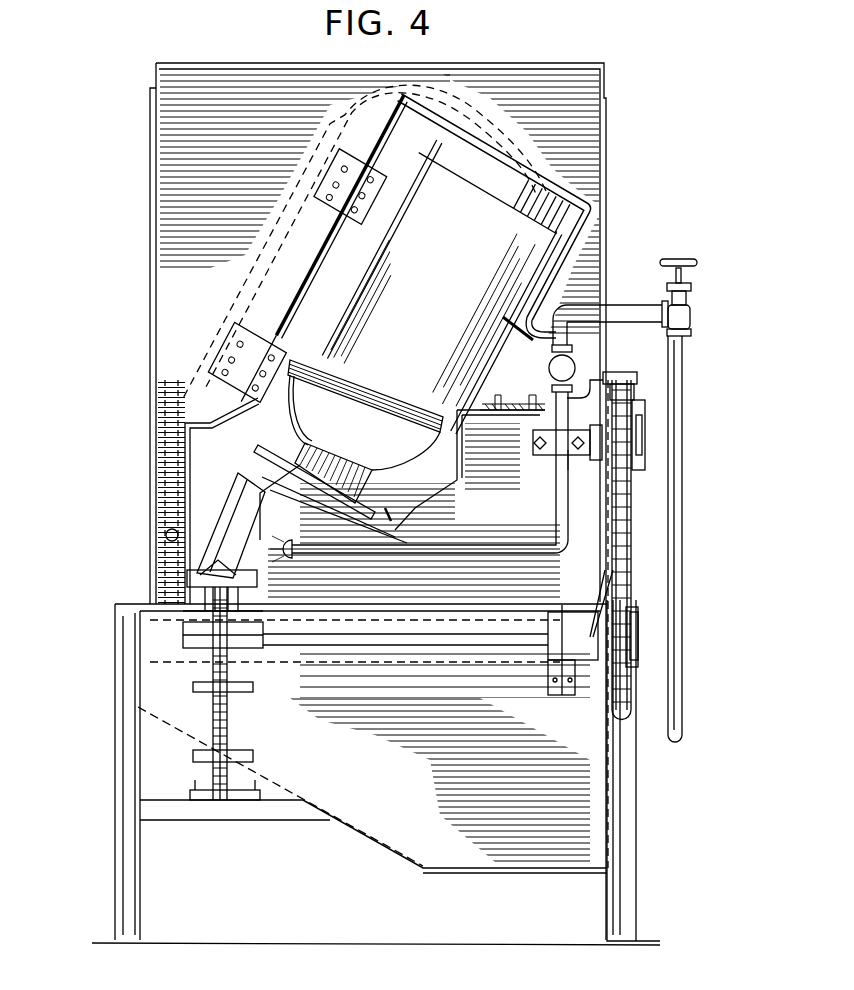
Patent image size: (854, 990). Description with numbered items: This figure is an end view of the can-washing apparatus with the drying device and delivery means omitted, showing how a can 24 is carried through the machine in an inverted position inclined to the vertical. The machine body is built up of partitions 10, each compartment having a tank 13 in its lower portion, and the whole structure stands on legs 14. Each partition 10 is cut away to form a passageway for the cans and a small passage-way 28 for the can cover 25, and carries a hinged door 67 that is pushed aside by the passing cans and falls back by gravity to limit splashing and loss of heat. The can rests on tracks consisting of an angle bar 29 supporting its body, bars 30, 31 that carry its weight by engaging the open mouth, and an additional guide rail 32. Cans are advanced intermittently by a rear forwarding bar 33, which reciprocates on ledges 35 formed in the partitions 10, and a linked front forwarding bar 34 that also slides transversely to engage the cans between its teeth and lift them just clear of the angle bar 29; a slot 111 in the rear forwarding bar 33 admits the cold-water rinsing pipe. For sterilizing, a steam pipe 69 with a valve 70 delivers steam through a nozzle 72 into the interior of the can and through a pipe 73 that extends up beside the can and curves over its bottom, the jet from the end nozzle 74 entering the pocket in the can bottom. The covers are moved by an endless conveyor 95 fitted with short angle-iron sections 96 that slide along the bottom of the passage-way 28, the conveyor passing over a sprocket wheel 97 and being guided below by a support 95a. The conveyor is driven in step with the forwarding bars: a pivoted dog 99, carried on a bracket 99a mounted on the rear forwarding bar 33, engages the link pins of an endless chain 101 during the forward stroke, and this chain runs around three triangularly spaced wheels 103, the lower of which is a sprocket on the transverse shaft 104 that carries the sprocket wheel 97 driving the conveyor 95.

The partition 10 is at (596, 140).
The tank 13 is at (372, 762).
The legs 14 is at (632, 910).
The can 24 is at (408, 299).
The can cover 25 is at (220, 522).
The passage-way for the covers 28 is at (190, 505).
The angle bar 29 is at (505, 319).
The bar 30 is at (362, 500).
The bar 31 is at (293, 465).
The guide rail 32 is at (393, 516).
The rear forwarding bar 33 is at (555, 408).
The front forwarding bar 34 is at (505, 402).
The ledges 35 is at (518, 418).
The hinged door 67 is at (325, 278).
The steam pipe 69 is at (682, 373).
The valve 70 is at (576, 362).
The nozzle 72 is at (298, 536).
The pipe 73 is at (234, 307).
The nozzle 74 is at (530, 203).
The endless chain or conveyor 95 is at (230, 727).
The support 95a is at (253, 803).
The angle iron sections 96 is at (256, 758).
The sprocket wheel 97 is at (212, 657).
The pivoted dog 99 is at (628, 396).
The bracket 99a is at (618, 375).
The endless chain 101 is at (633, 543).
The wheels 103 is at (640, 440).
The transverse shaft 104 is at (461, 646).
The slot 111 is at (586, 462).